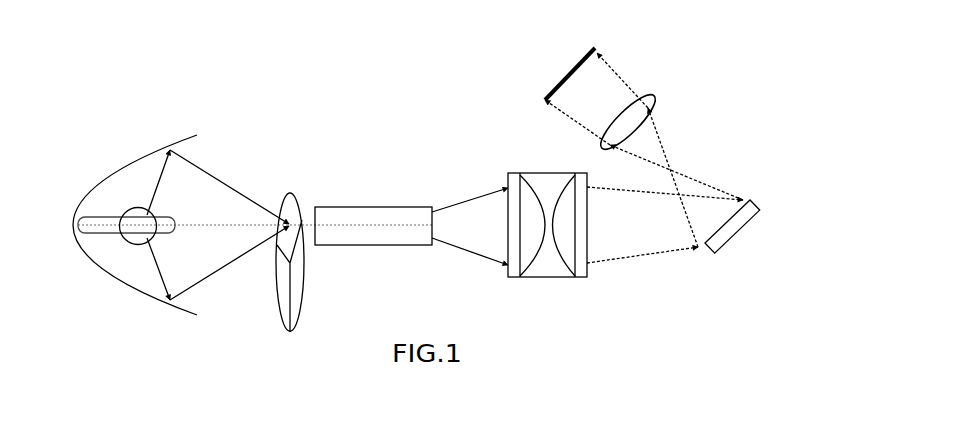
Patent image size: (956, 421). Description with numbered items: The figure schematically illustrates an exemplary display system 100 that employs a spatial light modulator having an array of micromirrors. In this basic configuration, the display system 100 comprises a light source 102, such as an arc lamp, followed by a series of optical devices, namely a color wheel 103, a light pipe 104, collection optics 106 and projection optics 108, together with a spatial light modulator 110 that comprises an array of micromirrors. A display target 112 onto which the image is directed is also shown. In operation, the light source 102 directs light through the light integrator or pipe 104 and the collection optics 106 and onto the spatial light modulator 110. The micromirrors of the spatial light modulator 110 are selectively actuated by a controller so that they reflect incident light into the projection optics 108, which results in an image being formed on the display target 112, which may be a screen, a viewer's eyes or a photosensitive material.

The display system 100 is at (347, 123).
The light source 102 is at (150, 155).
The color wheel 103 is at (303, 297).
The light pipe 104 is at (347, 207).
The collection optics 106 is at (547, 173).
The projection optics 108 is at (645, 95).
The spatial light modulator 110 is at (735, 232).
The display target 112 is at (577, 65).